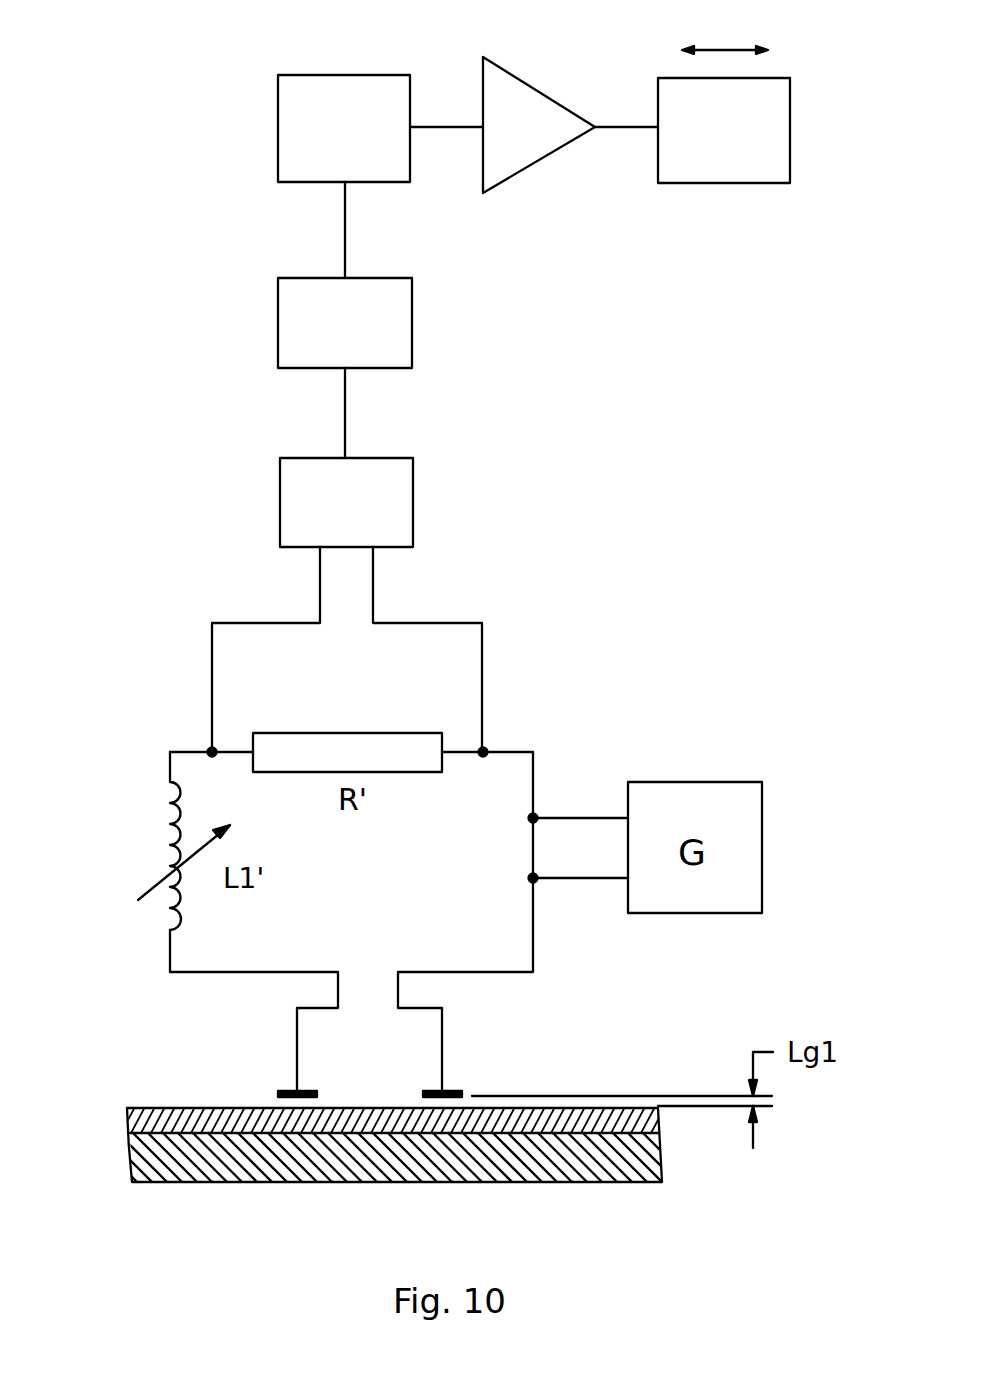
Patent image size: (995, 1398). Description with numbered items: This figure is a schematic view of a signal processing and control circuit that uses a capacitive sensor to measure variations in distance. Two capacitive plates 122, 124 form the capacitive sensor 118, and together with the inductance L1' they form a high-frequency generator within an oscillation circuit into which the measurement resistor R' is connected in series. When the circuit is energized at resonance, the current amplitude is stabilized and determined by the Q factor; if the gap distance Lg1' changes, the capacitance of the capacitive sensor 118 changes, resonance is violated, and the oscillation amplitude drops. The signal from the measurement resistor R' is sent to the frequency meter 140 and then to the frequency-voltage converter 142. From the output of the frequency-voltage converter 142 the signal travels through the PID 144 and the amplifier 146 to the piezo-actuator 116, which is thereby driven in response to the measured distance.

The PID 144 is at (333, 75).
The amplifier 146 is at (533, 88).
The piezo-actuator 116 is at (730, 183).
The frequency-voltage converter 142 is at (412, 327).
The frequency meter 140 is at (413, 508).
The capacitive plate 122 is at (278, 1093).
The capacitive plate 124 is at (463, 1090).
The capacitive sensor 118 is at (372, 1088).